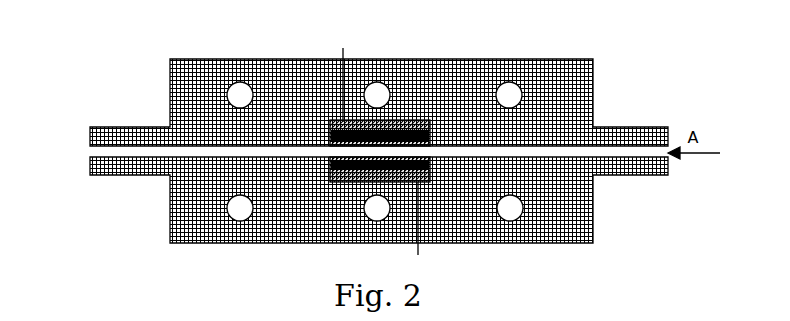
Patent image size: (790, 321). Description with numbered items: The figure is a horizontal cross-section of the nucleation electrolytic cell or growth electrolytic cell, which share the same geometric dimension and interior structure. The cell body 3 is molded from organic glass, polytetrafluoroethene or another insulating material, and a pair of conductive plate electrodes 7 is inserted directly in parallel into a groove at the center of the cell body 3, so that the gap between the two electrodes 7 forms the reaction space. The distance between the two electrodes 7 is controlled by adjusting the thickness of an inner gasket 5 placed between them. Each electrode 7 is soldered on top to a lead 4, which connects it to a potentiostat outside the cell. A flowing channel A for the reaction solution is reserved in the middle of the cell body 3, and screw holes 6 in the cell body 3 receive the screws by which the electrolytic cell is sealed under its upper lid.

The cell body 3 is at (200, 102).
The lead 4 is at (345, 85).
The inner gasket 5 is at (408, 125).
The screw hole 6 is at (509, 95).
The electrode 7 is at (336, 166).